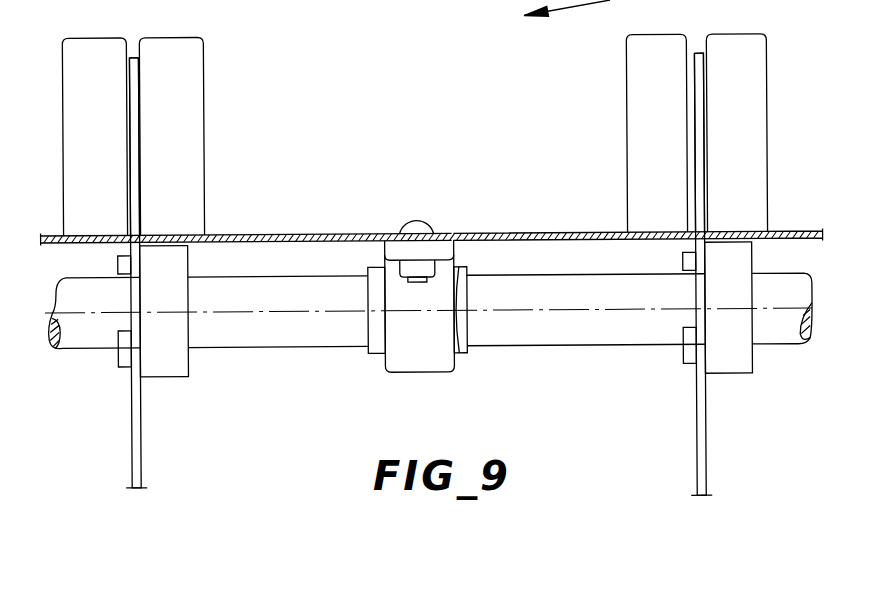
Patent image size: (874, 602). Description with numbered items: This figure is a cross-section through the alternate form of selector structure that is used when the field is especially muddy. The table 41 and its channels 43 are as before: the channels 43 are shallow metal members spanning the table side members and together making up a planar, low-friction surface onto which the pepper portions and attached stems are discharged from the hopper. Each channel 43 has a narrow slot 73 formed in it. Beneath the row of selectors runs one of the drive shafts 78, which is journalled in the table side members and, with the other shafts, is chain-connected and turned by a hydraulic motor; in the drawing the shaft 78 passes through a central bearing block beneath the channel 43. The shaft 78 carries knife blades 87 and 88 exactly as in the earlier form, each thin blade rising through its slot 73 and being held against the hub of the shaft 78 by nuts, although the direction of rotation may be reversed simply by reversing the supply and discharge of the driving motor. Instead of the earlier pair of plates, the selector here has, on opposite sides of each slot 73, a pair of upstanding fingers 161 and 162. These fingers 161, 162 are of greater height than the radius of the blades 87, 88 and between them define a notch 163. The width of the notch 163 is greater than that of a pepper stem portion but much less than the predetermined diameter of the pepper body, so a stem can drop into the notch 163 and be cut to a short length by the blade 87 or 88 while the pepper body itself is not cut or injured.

The table 41 is at (294, 200).
The channels 43 is at (546, 205).
The slot 73 is at (118, 247).
The drive shafts 78 is at (575, 332).
The knife blade 87 is at (140, 465).
The knife blade 88 is at (136, 137).
The upstanding finger 161 is at (193, 42).
The upstanding finger 162 is at (106, 17).
The notch 163 is at (135, 43).